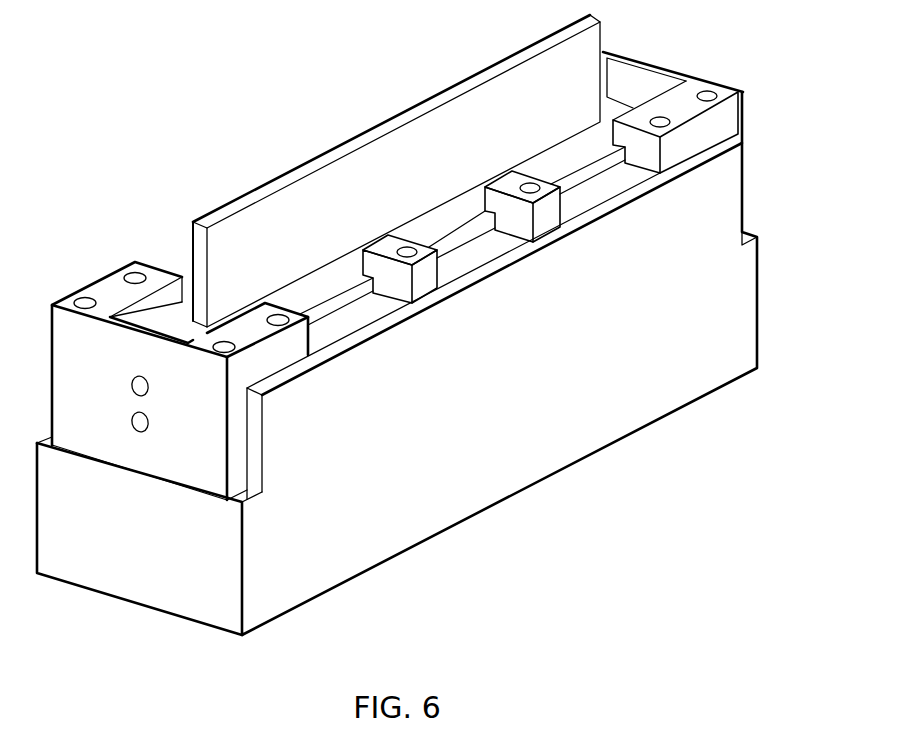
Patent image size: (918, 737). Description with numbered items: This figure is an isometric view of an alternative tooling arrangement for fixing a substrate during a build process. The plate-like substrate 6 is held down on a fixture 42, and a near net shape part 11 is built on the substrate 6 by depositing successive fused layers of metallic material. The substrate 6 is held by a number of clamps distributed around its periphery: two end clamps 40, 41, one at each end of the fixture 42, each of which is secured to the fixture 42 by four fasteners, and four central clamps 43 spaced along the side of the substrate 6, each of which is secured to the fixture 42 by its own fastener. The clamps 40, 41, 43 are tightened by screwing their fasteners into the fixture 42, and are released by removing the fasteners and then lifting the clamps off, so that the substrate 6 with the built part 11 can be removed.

The substrate 6 is at (333, 313).
The near net shape part 11 is at (350, 140).
The end clamp 40 is at (123, 450).
The end clamp 41 is at (687, 75).
The fixture 42 is at (500, 472).
The central clamp 43 is at (510, 223).